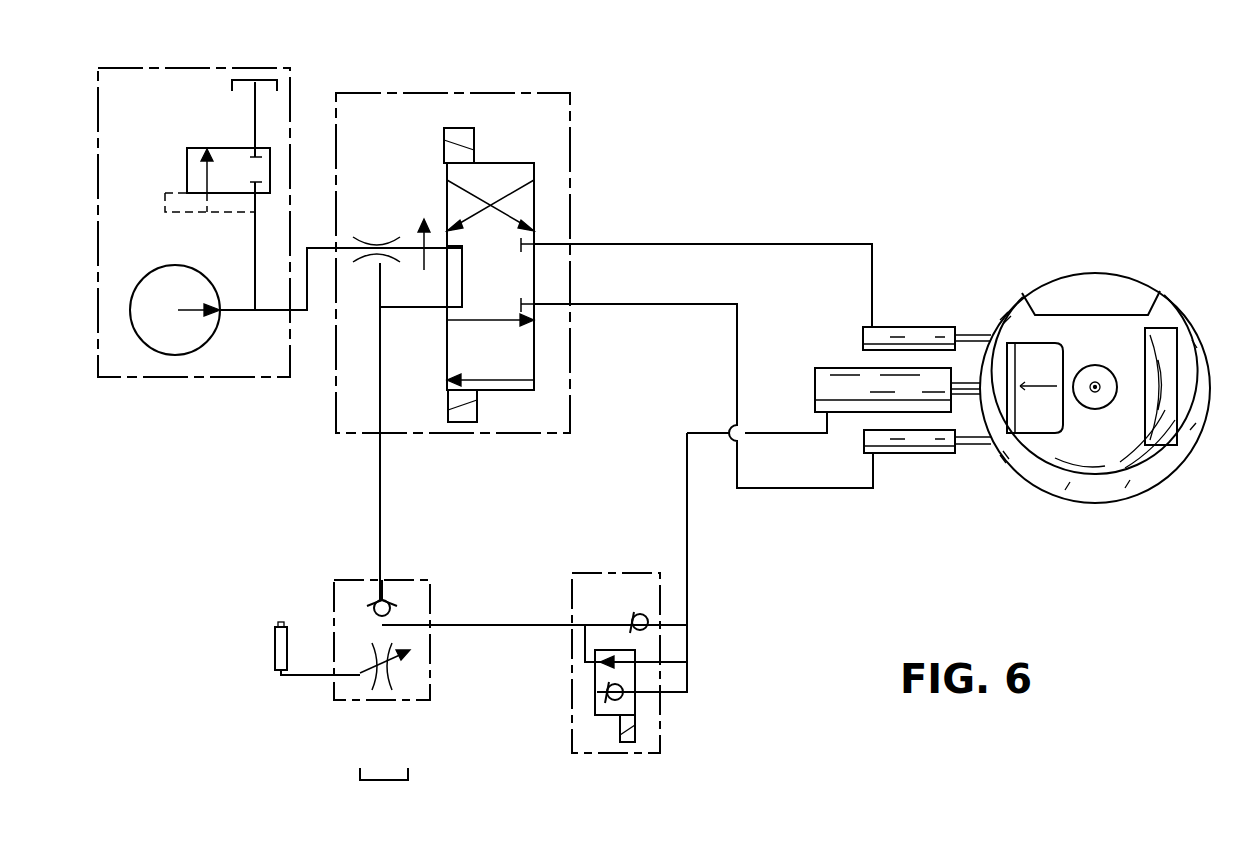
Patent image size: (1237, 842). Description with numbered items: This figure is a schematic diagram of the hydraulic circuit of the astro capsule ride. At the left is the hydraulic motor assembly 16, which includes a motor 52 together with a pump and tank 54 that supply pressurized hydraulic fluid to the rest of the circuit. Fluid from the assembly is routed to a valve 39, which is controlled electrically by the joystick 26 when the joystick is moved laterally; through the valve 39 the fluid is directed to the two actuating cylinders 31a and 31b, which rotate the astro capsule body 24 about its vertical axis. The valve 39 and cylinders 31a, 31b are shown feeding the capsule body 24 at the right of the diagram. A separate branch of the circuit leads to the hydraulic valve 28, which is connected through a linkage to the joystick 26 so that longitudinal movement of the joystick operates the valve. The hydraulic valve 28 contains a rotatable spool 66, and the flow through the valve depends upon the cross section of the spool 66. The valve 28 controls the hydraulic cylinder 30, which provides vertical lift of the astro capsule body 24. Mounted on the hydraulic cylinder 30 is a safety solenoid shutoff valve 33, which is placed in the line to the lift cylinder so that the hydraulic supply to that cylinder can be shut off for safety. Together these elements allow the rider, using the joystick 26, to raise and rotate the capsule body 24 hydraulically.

The hydraulic motor assembly 16 is at (143, 398).
The motor 52 is at (193, 300).
The pump and tank 54 is at (200, 148).
The valve 39 is at (537, 336).
The hydraulic cylinder 30 is at (815, 382).
The actuating cylinder 31a is at (920, 455).
The actuating cylinder 31b is at (915, 327).
The astro capsule body 24 is at (1113, 437).
The joystick 26 is at (1097, 383).
The hydraulic valve 28 is at (430, 592).
The rotatable spool 66 is at (386, 688).
The safety solenoid shutoff valve 33 is at (660, 712).